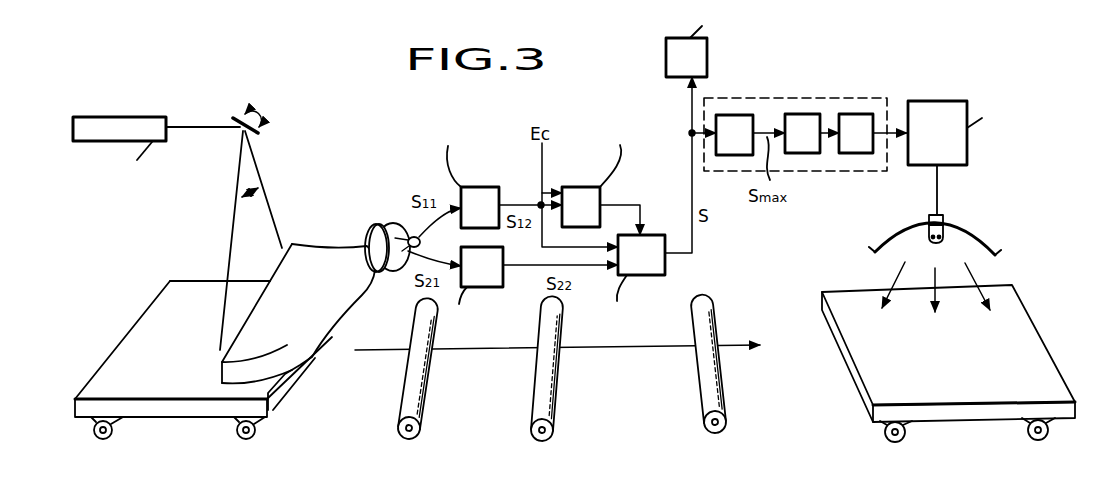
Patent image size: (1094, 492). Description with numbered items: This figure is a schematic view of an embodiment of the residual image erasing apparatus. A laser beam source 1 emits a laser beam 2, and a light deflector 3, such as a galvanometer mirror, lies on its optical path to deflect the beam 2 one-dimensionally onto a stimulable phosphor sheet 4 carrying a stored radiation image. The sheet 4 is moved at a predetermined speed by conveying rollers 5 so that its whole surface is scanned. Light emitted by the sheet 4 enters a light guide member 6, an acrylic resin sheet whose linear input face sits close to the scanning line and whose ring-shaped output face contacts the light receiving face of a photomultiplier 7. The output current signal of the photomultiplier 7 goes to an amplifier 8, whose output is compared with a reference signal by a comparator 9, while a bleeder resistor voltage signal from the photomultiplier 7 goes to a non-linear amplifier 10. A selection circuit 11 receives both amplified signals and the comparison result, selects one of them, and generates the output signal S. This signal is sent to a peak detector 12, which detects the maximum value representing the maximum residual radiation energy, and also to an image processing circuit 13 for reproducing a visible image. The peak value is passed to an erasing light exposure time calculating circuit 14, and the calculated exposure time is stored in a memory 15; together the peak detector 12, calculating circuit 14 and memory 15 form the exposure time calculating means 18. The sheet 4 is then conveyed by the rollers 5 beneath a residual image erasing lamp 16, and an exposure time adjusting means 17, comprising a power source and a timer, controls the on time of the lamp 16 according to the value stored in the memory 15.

The laser beam source 1 is at (100, 124).
The laser beam 2 is at (193, 127).
The light deflector 3 is at (237, 116).
The stimulable phosphor sheet 4 is at (123, 361).
The conveying rollers 5 is at (112, 434).
The light guide member 6 is at (328, 260).
The photomultiplier 7 is at (388, 228).
The amplifier 8 is at (478, 187).
The comparator 9 is at (585, 187).
The non-linear amplifier 10 is at (483, 287).
The selection circuit 11 is at (653, 275).
The peak detector 12 is at (740, 115).
The image processing circuit 13 is at (707, 54).
The erasing light exposure time calculating circuit 14 is at (803, 114).
The memory 15 is at (853, 114).
The residual image erasing lamp 16 is at (960, 228).
The exposure time adjusting means 17 is at (952, 100).
The exposure time calculating means 18 is at (887, 105).